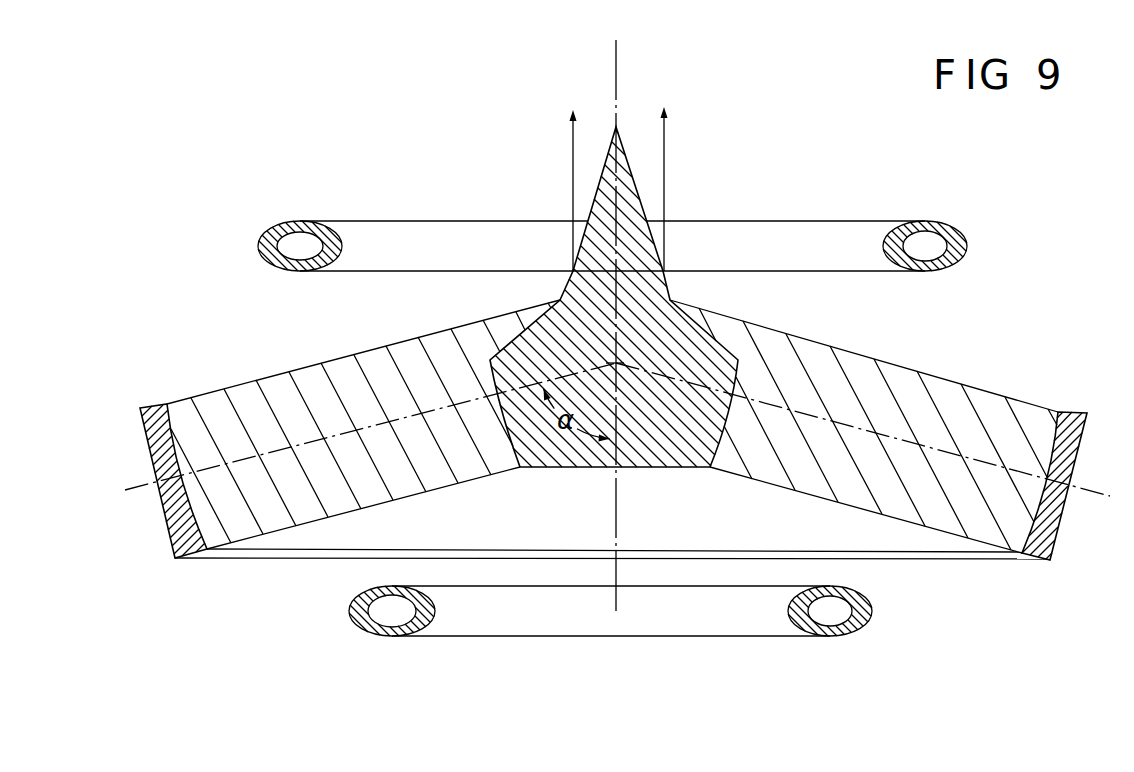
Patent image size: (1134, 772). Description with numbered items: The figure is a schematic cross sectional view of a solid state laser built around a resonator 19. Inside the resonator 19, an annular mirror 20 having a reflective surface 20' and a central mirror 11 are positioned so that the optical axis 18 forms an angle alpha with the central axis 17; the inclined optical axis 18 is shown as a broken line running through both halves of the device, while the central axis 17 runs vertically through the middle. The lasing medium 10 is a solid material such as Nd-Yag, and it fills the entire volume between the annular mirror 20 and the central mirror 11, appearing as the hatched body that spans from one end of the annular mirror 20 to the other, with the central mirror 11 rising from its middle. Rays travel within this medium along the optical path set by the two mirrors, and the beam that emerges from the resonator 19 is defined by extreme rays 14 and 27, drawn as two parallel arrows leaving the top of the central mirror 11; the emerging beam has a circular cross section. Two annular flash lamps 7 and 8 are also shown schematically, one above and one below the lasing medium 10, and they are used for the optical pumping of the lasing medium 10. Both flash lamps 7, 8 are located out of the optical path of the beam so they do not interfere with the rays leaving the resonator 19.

The annular flash lamp 7 is at (703, 242).
The annular flash lamp 8 is at (472, 612).
The lasing medium 10 is at (252, 395).
The central mirror 11 is at (650, 440).
The extreme ray 14 is at (571, 163).
The central axis 17 is at (614, 70).
The optical axis 18 is at (917, 443).
The resonator 19 is at (1003, 287).
The annular mirror 20 is at (580, 465).
The reflective surface 20' is at (612, 563).
The extreme ray 27 is at (668, 148).